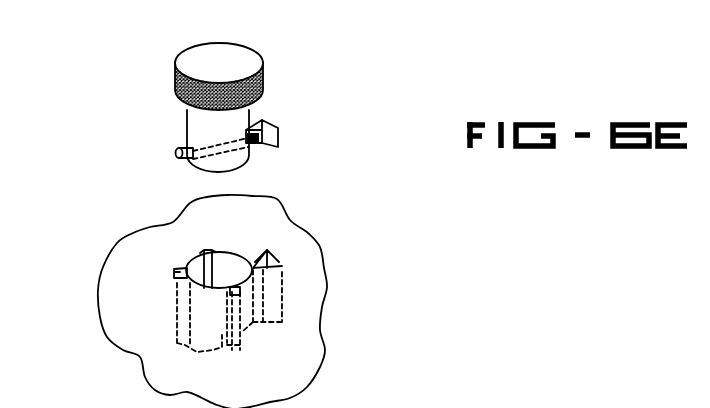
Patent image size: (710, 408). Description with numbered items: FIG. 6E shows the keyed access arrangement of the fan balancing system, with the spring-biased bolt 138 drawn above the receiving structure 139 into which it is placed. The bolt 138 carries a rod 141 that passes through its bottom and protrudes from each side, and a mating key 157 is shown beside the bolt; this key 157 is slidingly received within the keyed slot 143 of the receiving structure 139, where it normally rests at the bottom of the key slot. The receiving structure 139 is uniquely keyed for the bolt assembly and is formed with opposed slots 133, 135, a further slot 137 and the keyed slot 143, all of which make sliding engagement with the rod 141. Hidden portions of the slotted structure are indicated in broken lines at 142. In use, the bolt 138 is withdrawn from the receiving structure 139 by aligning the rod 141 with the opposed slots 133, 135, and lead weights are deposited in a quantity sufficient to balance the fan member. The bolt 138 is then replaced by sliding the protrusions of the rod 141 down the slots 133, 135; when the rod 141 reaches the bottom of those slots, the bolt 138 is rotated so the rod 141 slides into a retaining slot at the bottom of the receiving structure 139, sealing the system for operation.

The spring-biased bolt 138 is at (252, 63).
The mating key 157 is at (266, 129).
The rod 141 is at (176, 151).
The receiving structure 139 is at (223, 268).
The opposed slot 133 is at (205, 251).
The slot 137 is at (175, 275).
The opposed slot 135 is at (229, 290).
The keyed slot 143 is at (282, 266).
The hidden slot 142 is at (200, 350).